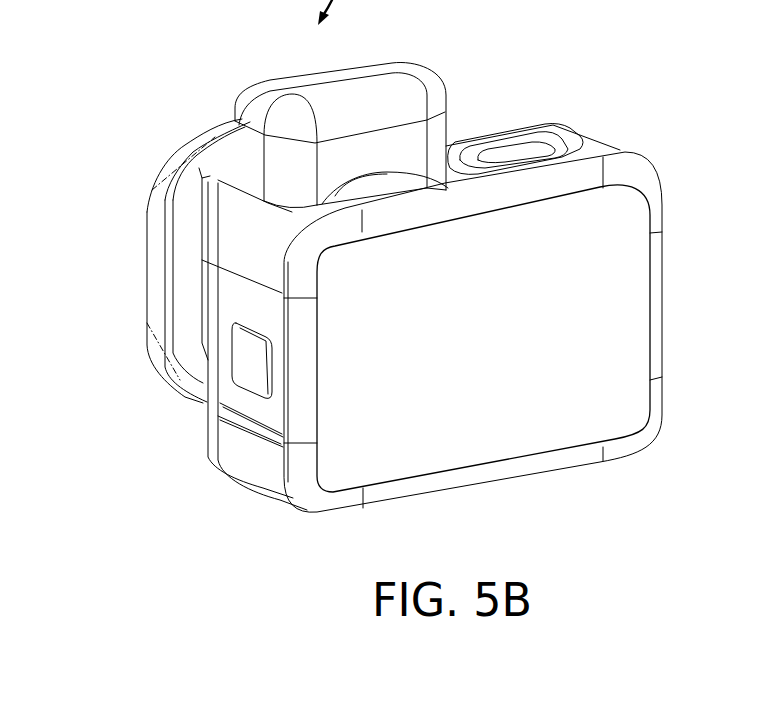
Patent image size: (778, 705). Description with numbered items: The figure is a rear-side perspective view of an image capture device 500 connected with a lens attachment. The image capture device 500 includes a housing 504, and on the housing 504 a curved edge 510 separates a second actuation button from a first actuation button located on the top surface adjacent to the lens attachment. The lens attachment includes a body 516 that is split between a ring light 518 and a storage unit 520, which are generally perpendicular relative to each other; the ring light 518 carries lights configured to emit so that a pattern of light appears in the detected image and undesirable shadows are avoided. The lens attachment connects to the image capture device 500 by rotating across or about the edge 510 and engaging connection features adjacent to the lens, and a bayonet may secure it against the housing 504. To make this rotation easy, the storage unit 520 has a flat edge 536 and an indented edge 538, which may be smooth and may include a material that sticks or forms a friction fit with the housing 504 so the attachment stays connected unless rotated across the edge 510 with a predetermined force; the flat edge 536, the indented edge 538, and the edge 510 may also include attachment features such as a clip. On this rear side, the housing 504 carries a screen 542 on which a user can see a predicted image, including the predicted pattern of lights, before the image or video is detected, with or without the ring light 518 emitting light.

The image capture device 500 is at (88, 130).
The housing 504 is at (559, 116).
The edge 510 is at (257, 219).
The body 516 is at (388, 58).
The ring light 518 is at (148, 259).
The storage unit 520 is at (247, 87).
The flat edge 536 is at (243, 192).
The indented edge 538 is at (363, 175).
The screen 542 is at (547, 455).